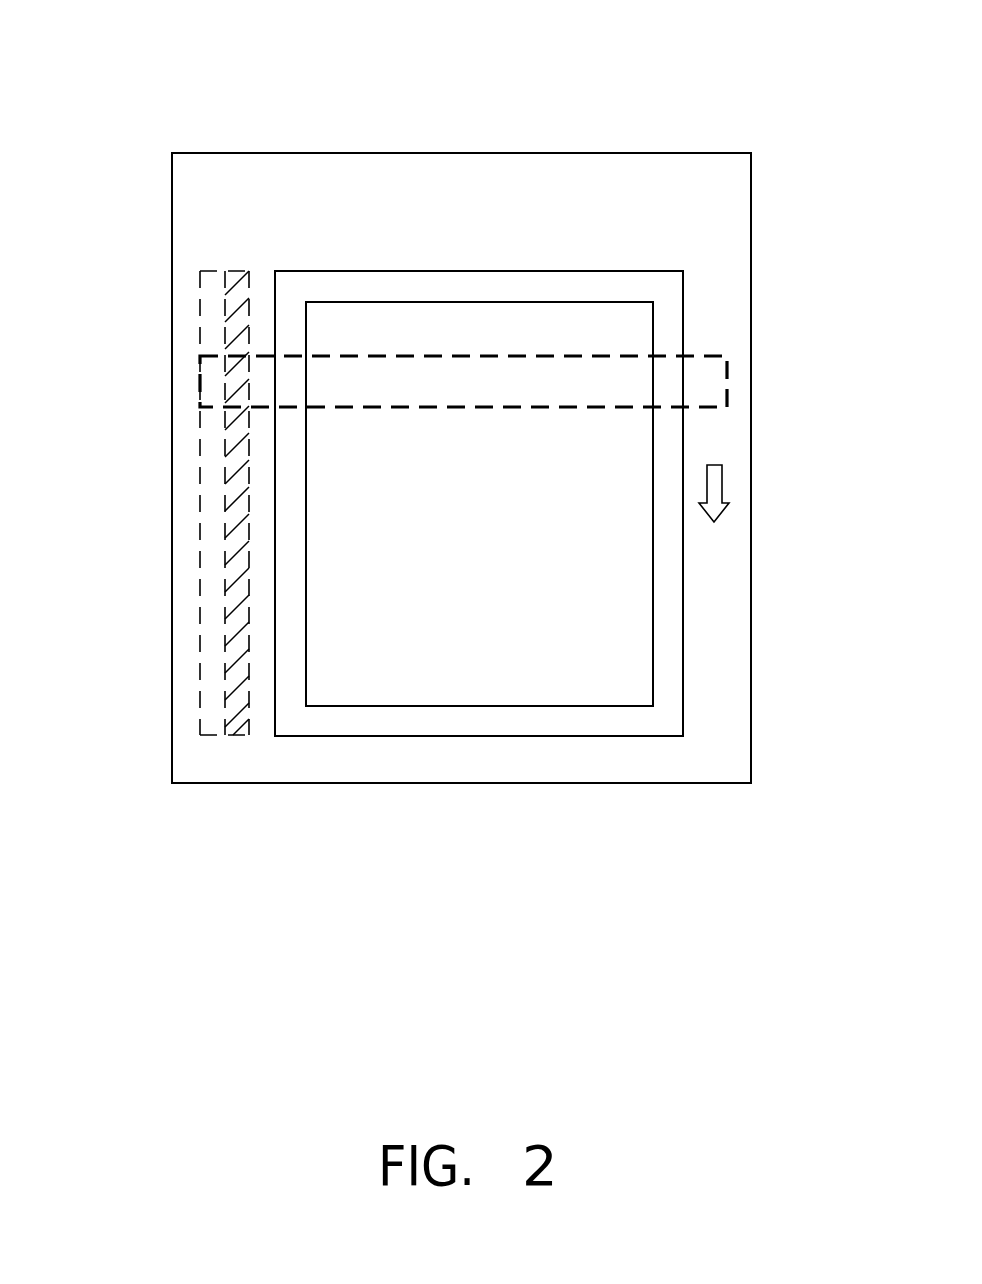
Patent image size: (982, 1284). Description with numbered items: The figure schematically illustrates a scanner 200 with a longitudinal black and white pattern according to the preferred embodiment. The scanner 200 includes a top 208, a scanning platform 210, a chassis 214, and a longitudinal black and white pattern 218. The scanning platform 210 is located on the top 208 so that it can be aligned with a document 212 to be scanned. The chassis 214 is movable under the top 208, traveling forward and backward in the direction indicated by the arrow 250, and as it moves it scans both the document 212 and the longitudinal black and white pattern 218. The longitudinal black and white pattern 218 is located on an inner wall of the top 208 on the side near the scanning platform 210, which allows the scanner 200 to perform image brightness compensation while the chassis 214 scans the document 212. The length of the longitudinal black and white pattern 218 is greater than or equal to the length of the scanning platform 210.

The scanner 200 is at (753, 152).
The top 208 is at (733, 690).
The scanning platform 210 is at (665, 605).
The document 212 is at (637, 541).
The chassis 214 is at (727, 381).
The longitudinal black and white pattern 218 is at (218, 497).
The arrow 250 is at (715, 479).